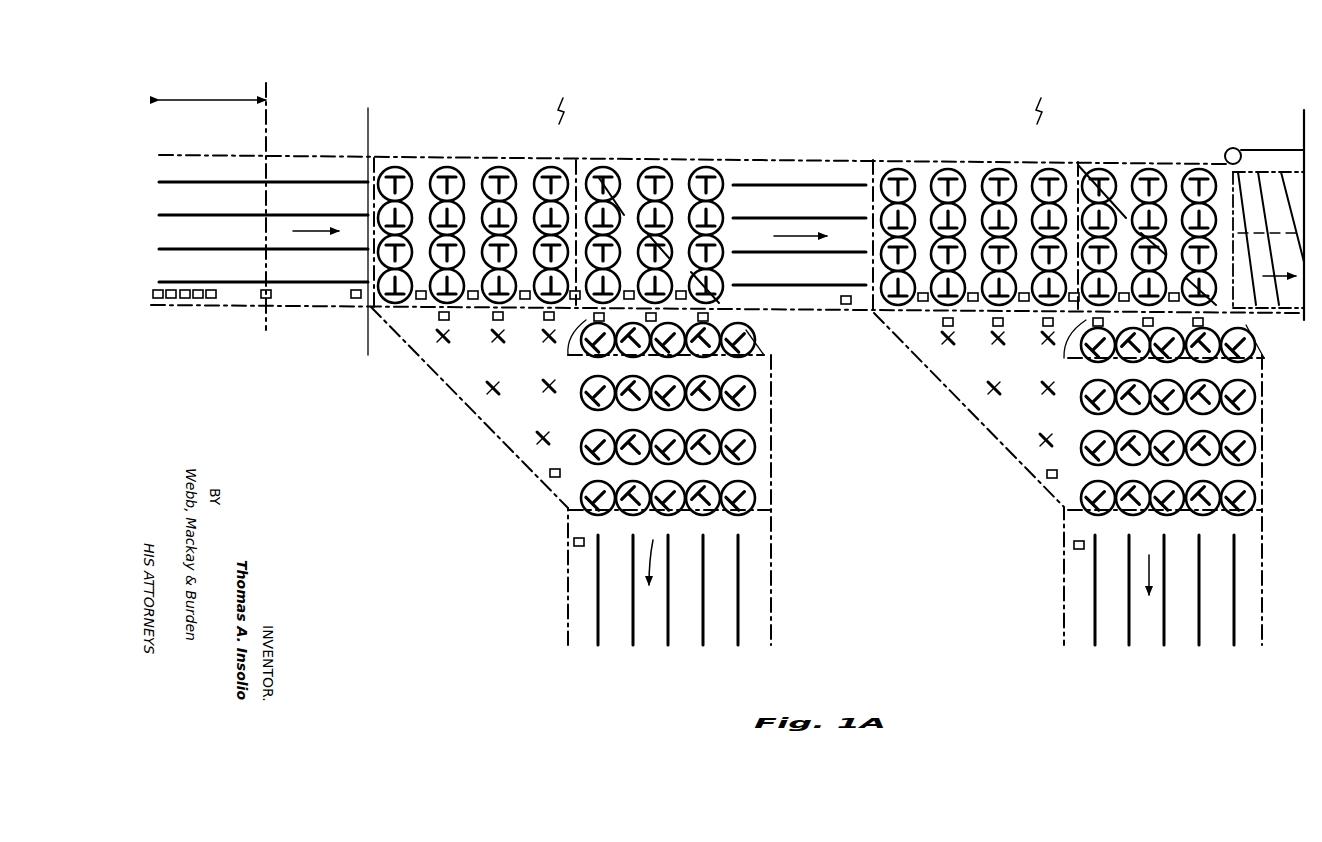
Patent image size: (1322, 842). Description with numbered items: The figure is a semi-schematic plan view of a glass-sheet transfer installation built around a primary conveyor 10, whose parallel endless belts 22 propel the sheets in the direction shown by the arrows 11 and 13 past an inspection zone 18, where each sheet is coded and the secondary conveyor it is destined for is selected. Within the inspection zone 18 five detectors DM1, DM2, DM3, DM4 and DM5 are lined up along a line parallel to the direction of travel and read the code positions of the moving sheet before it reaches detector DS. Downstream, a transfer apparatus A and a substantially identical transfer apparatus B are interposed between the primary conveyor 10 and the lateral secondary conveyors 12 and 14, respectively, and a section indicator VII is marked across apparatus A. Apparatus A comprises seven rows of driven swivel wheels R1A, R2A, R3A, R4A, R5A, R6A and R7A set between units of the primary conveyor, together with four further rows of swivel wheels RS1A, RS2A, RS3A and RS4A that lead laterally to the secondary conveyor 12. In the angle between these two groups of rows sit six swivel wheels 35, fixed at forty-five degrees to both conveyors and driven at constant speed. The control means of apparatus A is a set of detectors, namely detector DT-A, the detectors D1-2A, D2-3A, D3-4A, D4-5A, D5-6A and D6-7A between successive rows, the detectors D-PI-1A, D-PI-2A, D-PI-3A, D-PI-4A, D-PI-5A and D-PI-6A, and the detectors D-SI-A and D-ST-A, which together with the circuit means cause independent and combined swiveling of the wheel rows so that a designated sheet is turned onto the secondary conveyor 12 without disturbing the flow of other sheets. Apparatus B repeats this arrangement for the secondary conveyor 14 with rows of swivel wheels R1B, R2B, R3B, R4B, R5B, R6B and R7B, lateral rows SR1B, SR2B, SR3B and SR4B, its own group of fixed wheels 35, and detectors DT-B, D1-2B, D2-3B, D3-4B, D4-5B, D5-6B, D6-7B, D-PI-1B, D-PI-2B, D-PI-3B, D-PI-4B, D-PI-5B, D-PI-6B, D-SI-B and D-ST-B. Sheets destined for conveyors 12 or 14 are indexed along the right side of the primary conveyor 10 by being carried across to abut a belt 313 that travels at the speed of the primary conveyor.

The inspection zone 18 is at (224, 62).
The primary conveyor 10 is at (294, 155).
The endless belts 22 is at (236, 183).
The direction of travel 11 is at (308, 228).
The secondary conveyor 12 is at (774, 612).
The direction of travel 13 is at (652, 552).
The secondary conveyor 14 is at (1060, 596).
The swivel wheels 35 is at (500, 395).
The belt 313 is at (1272, 153).
The section line VII is at (410, 117).
The transfer apparatus A is at (559, 101).
The transfer apparatus B is at (1037, 101).
The detector DS is at (268, 298).
The detector DT-A is at (352, 298).
The detector DT-B is at (840, 300).
The detector DM1 is at (210, 298).
The detector DM2 is at (197, 298).
The detector DM3 is at (184, 298).
The detector DM4 is at (170, 298).
The detector DM5 is at (157, 298).
The row of swivel wheels R1A is at (390, 166).
The row of swivel wheels R2A is at (442, 166).
The row of swivel wheels R3A is at (494, 166).
The row of swivel wheels R4A is at (546, 166).
The row of swivel wheels R5A is at (598, 166).
The row of swivel wheels R6A is at (650, 166).
The row of swivel wheels R7A is at (701, 166).
The row of swivel wheels R1B is at (893, 168).
The row of swivel wheels R2B is at (943, 168).
The row of swivel wheels R3B is at (994, 168).
The row of swivel wheels R4B is at (1044, 168).
The row of swivel wheels R5B is at (1094, 168).
The row of swivel wheels R6B is at (1144, 168).
The row of swivel wheels R7B is at (1194, 168).
The detector D1-2A is at (420, 291).
The detector D2-3A is at (472, 291).
The detector D3-4A is at (524, 291).
The detector D4-5A is at (574, 291).
The detector D5-6A is at (628, 291).
The detector D6-7A is at (680, 291).
The detector D1-2B is at (922, 293).
The detector D2-3B is at (972, 293).
The detector D3-4B is at (1023, 293).
The detector D4-5B is at (1073, 293).
The detector D5-6B is at (1123, 293).
The detector D6-7B is at (1173, 293).
The detector D-PI-1A is at (440, 322).
The detector D-PI-2A is at (497, 320).
The detector D-PI-3A is at (545, 322).
The detector D-PI-4A is at (580, 325).
The detector D-PI-5A is at (648, 321).
The detector D-PI-6A is at (707, 317).
The detector D-PI-1B is at (945, 328).
The detector D-PI-2B is at (997, 326).
The detector D-PI-3B is at (1045, 328).
The detector D-PI-4B is at (1095, 325).
The detector D-PI-5B is at (1145, 325).
The detector D-PI-6B is at (1203, 321).
The detector D-SI-A is at (549, 476).
The detector D-ST-A is at (573, 543).
The detector D-SI-B is at (1046, 476).
The detector D-ST-B is at (1073, 545).
The row of swivel wheels RS1A is at (752, 330).
The row of swivel wheels RS2A is at (755, 393).
The row of swivel wheels RS3A is at (755, 447).
The row of swivel wheels RS4A is at (755, 498).
The row of swivel wheels SR1B is at (1250, 355).
The row of swivel wheels SR2B is at (1254, 397).
The row of swivel wheels SR3B is at (1254, 452).
The row of swivel wheels SR4B is at (1254, 497).